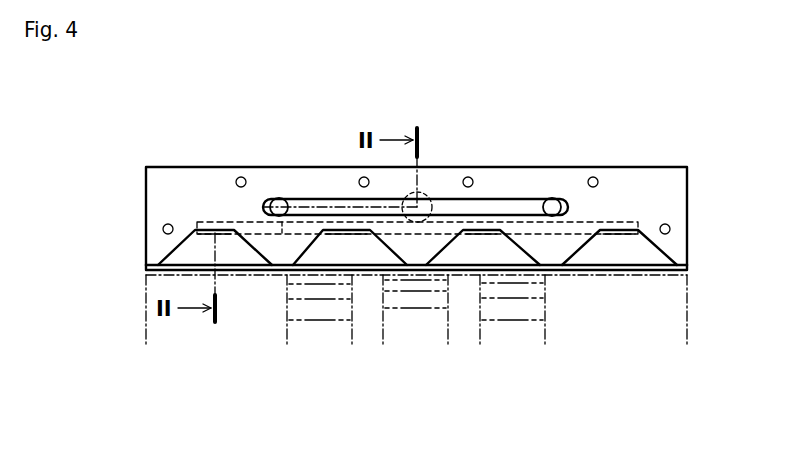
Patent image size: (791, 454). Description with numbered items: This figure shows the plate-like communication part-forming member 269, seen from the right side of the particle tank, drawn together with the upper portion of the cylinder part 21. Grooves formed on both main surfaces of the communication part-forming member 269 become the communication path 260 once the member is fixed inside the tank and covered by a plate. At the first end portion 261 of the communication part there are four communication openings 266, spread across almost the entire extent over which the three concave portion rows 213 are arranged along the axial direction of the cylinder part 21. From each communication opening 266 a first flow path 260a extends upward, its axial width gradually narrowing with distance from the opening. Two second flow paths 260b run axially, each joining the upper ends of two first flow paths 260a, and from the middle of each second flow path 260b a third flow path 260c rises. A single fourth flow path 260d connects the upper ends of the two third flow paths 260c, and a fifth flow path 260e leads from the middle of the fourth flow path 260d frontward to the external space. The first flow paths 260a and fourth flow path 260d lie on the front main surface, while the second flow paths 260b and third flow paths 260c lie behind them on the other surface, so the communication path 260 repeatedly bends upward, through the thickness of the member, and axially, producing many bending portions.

The communication path 260 is at (609, 113).
The communication part-forming member 269 is at (145, 181).
The first end portion 261 is at (145, 264).
The first flow path 260a is at (200, 250).
The second flow path 260b is at (247, 228).
The third flow path 260c is at (279, 197).
The fourth flow path 260d is at (332, 203).
The fifth flow path 260e is at (423, 193).
The communication opening 266 is at (238, 258).
The concave portion row 213 is at (322, 333).
The cylinder part 21 is at (688, 317).